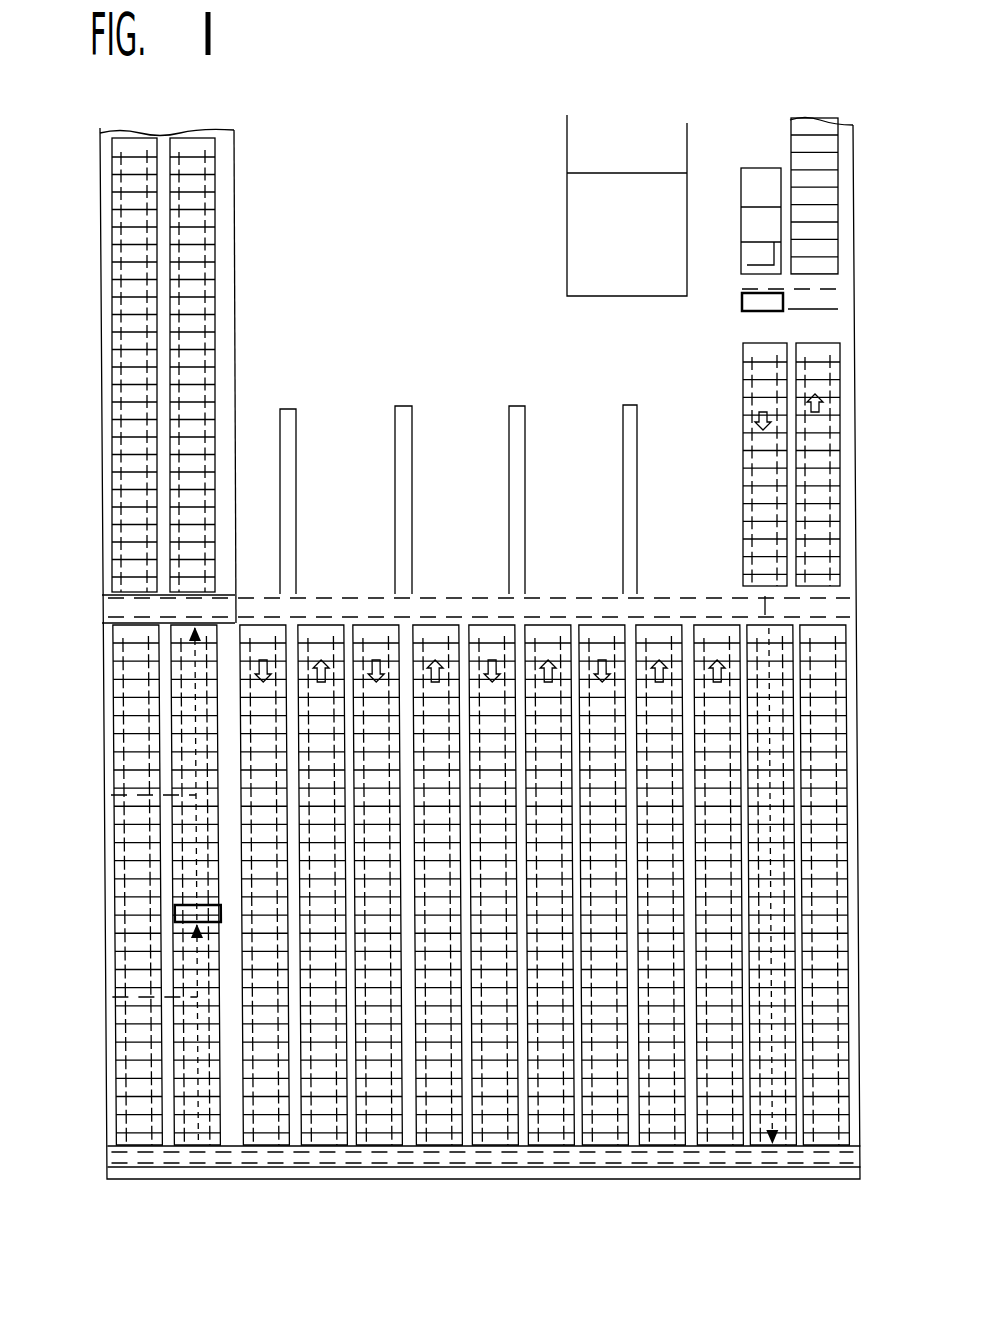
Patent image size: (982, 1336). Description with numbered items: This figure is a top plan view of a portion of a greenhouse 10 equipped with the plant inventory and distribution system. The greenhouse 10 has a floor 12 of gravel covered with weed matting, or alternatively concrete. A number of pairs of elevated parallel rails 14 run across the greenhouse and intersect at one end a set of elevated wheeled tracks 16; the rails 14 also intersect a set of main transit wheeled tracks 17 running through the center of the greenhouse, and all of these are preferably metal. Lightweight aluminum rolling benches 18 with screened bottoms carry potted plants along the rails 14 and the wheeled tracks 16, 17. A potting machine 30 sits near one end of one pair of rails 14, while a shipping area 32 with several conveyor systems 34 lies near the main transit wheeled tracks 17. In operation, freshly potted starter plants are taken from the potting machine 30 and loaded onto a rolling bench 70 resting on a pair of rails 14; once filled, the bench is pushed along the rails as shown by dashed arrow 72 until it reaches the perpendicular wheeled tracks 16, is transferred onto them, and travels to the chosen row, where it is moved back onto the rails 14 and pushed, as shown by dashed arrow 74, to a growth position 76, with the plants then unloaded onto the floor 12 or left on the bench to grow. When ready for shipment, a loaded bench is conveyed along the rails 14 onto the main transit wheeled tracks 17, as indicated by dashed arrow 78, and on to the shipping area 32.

The greenhouse 10 is at (68, 338).
The floor 12 is at (165, 497).
The elevated parallel rails 14 is at (122, 549).
The elevated wheeled tracks 16 is at (122, 1158).
The main transit wheeled tracks 17 is at (108, 610).
The rolling benches 18 is at (130, 725).
The potting machine 30 is at (782, 214).
The shipping area 32 is at (418, 343).
The conveyor systems 34 is at (296, 430).
The rolling bench 70 is at (742, 310).
The dashed arrow 72 is at (762, 600).
The dashed arrow 74 is at (112, 997).
The growth position 76 is at (172, 912).
The dashed arrow 78 is at (112, 795).